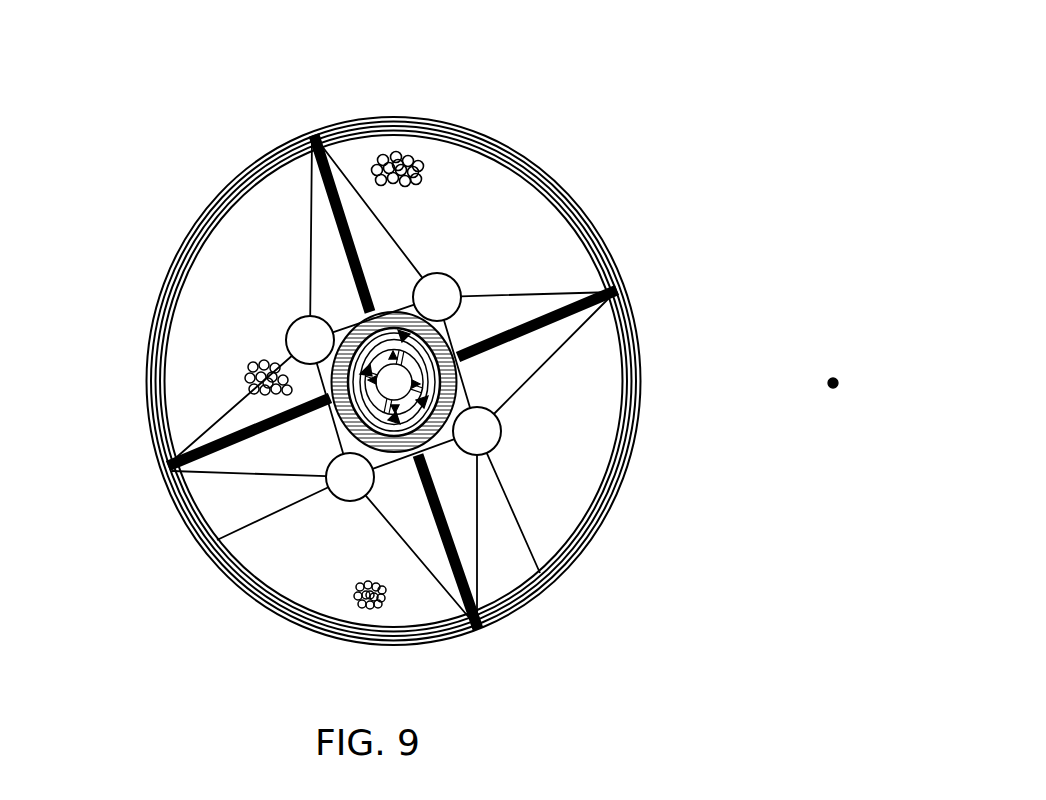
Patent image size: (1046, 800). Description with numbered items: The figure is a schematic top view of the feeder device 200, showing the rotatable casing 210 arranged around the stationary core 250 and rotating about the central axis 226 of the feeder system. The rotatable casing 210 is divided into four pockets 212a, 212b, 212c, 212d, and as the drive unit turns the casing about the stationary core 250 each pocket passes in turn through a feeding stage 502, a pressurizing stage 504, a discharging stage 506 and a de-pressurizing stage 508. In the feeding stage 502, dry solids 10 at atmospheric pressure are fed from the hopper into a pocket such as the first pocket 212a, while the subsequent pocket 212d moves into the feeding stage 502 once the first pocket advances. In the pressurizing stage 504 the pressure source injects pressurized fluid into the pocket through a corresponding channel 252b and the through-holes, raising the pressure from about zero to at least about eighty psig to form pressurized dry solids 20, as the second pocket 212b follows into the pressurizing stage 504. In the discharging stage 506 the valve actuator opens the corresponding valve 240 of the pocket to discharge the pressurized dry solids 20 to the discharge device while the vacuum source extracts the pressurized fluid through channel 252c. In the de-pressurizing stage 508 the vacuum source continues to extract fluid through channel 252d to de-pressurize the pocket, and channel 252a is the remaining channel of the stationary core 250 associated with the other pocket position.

The feeder device 200 is at (216, 64).
The dry solids 10 is at (391, 150).
The pressurized dry solids 20 is at (358, 607).
The rotatable casing 210 is at (200, 205).
The first pocket 212a is at (462, 237).
The second pocket 212b is at (230, 361).
The third pocket 212c is at (270, 497).
The fourth pocket 212d is at (565, 470).
The central axis 226 is at (828, 383).
The valve 240 is at (310, 322).
The stationary core 250 is at (337, 232).
The channel 252a is at (288, 352).
The channel 252b is at (262, 383).
The channel 252c is at (470, 560).
The channel 252d is at (553, 551).
The feeding stage 502 is at (442, 148).
The pressurizing stage 504 is at (223, 267).
The discharging stage 506 is at (252, 537).
The de-pressurizing stage 508 is at (548, 555).